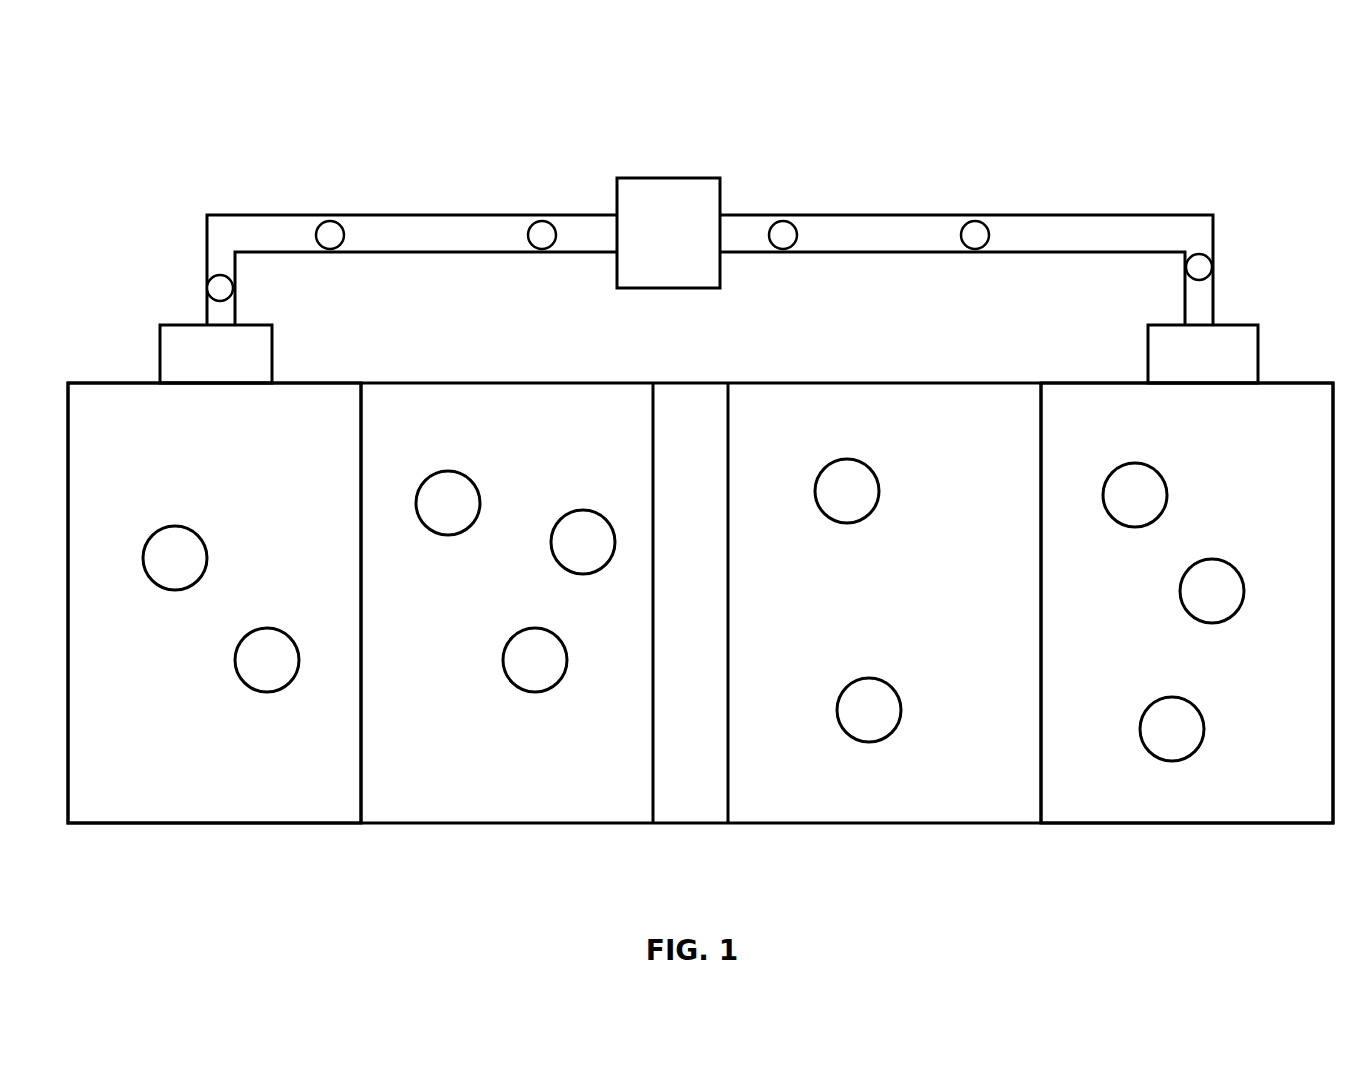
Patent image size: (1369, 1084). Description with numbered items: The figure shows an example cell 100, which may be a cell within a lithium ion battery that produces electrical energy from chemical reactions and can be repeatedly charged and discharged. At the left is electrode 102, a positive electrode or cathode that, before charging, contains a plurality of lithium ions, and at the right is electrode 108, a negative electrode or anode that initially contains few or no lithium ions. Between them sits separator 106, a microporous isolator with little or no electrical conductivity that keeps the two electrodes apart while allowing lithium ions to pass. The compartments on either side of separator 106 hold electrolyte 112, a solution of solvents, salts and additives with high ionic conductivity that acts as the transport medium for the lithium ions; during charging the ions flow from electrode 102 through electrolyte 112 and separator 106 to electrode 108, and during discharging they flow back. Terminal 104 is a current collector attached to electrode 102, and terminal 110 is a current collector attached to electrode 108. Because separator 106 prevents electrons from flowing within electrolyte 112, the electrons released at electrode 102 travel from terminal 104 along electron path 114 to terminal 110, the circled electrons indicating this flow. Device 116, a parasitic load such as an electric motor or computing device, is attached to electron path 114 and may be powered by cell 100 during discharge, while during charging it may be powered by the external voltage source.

The cell 100 is at (994, 80).
The electrode 102 is at (214, 603).
The terminal 104 is at (216, 354).
The separator 106 is at (690, 603).
The electrode 108 is at (1187, 603).
The terminal 110 is at (1203, 354).
The electrolyte 112 is at (701, 603).
The electron path 114 is at (710, 270).
The device 116 is at (668, 233).